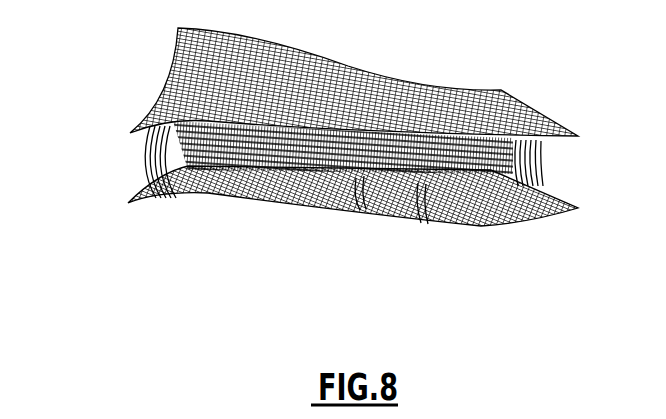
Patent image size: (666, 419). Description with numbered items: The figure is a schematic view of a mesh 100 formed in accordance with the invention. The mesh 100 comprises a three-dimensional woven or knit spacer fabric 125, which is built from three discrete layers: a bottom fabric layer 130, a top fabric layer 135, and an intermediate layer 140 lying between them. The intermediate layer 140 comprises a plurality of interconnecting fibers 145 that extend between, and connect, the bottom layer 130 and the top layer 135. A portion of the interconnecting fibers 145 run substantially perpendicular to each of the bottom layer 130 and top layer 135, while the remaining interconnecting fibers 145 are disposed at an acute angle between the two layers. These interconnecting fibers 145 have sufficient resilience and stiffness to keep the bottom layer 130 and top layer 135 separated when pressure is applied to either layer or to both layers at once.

The mesh 100 is at (178, 264).
The spacer fabric 125 is at (102, 157).
The bottom fabric layer 130 is at (535, 209).
The top fabric layer 135 is at (568, 126).
The intermediate layer 140 is at (505, 157).
The interconnecting fibers 145 is at (352, 202).